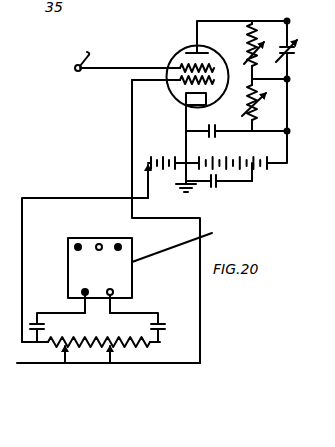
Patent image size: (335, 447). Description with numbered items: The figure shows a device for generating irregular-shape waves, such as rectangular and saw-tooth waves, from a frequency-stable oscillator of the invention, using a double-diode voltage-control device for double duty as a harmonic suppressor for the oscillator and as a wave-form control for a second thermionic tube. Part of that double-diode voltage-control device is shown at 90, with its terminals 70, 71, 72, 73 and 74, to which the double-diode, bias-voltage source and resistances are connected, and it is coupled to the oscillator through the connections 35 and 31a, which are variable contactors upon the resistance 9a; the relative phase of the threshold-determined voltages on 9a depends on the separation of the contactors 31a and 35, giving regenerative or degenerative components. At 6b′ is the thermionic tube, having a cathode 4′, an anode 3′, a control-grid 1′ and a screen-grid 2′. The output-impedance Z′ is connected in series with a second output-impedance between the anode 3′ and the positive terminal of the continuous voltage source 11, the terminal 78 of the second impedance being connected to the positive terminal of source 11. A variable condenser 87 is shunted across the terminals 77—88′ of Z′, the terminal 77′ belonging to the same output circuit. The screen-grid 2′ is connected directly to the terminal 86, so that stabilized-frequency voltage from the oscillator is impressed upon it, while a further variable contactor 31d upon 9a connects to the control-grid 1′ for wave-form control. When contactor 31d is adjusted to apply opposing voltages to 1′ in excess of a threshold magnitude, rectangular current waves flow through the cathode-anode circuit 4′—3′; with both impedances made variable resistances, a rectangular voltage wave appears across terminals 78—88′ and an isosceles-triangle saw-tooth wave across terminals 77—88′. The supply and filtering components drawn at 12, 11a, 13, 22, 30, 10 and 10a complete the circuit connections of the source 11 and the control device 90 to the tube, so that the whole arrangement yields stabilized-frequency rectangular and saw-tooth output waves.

The terminal 86 is at (87, 53).
The screen-grid 2′ is at (165, 67).
The anode 3′ is at (190, 48).
The control-grid 1′ is at (167, 84).
The cathode 4′ is at (206, 99).
The thermionic tube 6b′ is at (172, 99).
The terminal 77′ is at (283, 18).
The terminal 77 is at (290, 10).
The condenser 87 is at (284, 45).
The output-impedance Z′ is at (247, 38).
The terminal 88′ is at (294, 105).
The terminal 78 is at (289, 131).
The capacitor 12 is at (220, 127).
The continuous voltage source 11 is at (245, 156).
The battery tap 11a is at (256, 178).
The capacitor 13 is at (220, 184).
The battery 22 is at (170, 147).
The ground 30 is at (192, 192).
The variable contactor 35 is at (70, 198).
The double-diode voltage-control device 90 is at (68, 268).
The terminal 70 is at (70, 238).
The terminal 71 is at (96, 238).
The terminal 72 is at (120, 238).
The terminal 73 is at (68, 292).
The terminal 74 is at (113, 290).
The capacitor 10 is at (44, 324).
The capacitor 10a is at (162, 320).
The resistance 9a is at (124, 337).
The variable contactor 31a is at (52, 368).
The variable contactor 31d is at (202, 338).